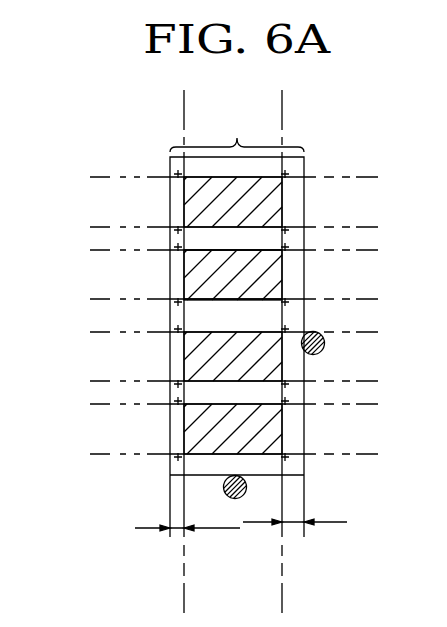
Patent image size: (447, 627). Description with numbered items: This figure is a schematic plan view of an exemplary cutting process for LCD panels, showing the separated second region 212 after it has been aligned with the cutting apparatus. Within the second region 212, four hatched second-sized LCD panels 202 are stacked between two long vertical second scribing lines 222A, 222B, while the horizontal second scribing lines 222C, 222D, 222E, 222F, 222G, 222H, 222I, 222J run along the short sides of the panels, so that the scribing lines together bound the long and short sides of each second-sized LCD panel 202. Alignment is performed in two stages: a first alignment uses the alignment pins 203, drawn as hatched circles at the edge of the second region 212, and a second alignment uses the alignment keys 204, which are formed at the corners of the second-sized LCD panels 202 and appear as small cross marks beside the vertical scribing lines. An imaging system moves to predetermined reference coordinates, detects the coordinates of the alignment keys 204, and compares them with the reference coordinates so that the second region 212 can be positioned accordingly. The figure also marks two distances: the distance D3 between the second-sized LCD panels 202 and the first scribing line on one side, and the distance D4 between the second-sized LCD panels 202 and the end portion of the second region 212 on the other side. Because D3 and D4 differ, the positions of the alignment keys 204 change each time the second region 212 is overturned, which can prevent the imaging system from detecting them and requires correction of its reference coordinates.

The second scribing line 222A is at (186, 341).
The second scribing line 222B is at (284, 341).
The second region 212 is at (237, 133).
The second scribing line 222C is at (209, 177).
The second scribing line 222D is at (209, 227).
The second scribing line 222E is at (209, 250).
The second scribing line 222F is at (209, 299).
The second scribing line 222G is at (209, 332).
The second scribing line 222H is at (209, 381).
The second scribing line 222I is at (209, 404).
The second scribing line 222J is at (209, 454).
The second-sized LCD panel 202 is at (263, 195).
The alignment key 204 is at (284, 301).
The alignment pin 203 is at (324, 341).
The distance between the second-sized LCD panels and the first scribing line D3 is at (187, 519).
The distance between the second-sized LCD panels and the end portion of the second r D4 is at (295, 514).